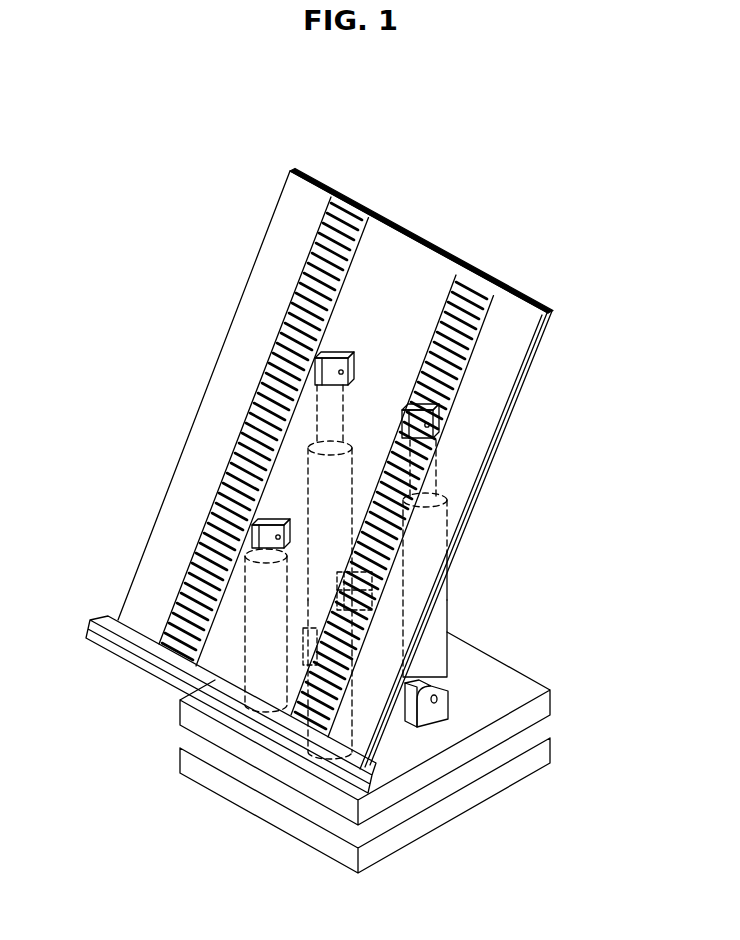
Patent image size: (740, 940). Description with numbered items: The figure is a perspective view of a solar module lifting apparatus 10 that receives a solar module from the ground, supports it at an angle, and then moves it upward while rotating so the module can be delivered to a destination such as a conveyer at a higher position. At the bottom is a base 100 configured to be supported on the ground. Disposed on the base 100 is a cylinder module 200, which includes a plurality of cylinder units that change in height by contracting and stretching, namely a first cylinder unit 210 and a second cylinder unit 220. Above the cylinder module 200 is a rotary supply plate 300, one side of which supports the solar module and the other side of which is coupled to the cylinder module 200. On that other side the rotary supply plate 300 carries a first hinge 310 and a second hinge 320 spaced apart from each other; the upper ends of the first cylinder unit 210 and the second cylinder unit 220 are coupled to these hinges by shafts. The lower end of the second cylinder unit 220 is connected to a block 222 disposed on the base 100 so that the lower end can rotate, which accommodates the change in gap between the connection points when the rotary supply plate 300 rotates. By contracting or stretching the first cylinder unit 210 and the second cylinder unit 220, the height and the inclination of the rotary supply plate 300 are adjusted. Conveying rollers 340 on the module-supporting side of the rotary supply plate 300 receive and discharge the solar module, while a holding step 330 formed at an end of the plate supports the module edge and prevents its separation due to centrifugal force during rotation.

The solar module lifting apparatus 10 is at (203, 170).
The base 100 is at (510, 803).
The cylinder module 200 is at (455, 608).
The first cylinder unit 210 is at (353, 727).
The second cylinder unit 220 is at (435, 548).
The block 222 is at (445, 693).
The rotary supply plate 300 is at (208, 362).
The first hinge 310 is at (340, 607).
The second hinge 320 is at (445, 412).
The holding step 330 is at (102, 620).
The conveying rollers 340 is at (347, 222).